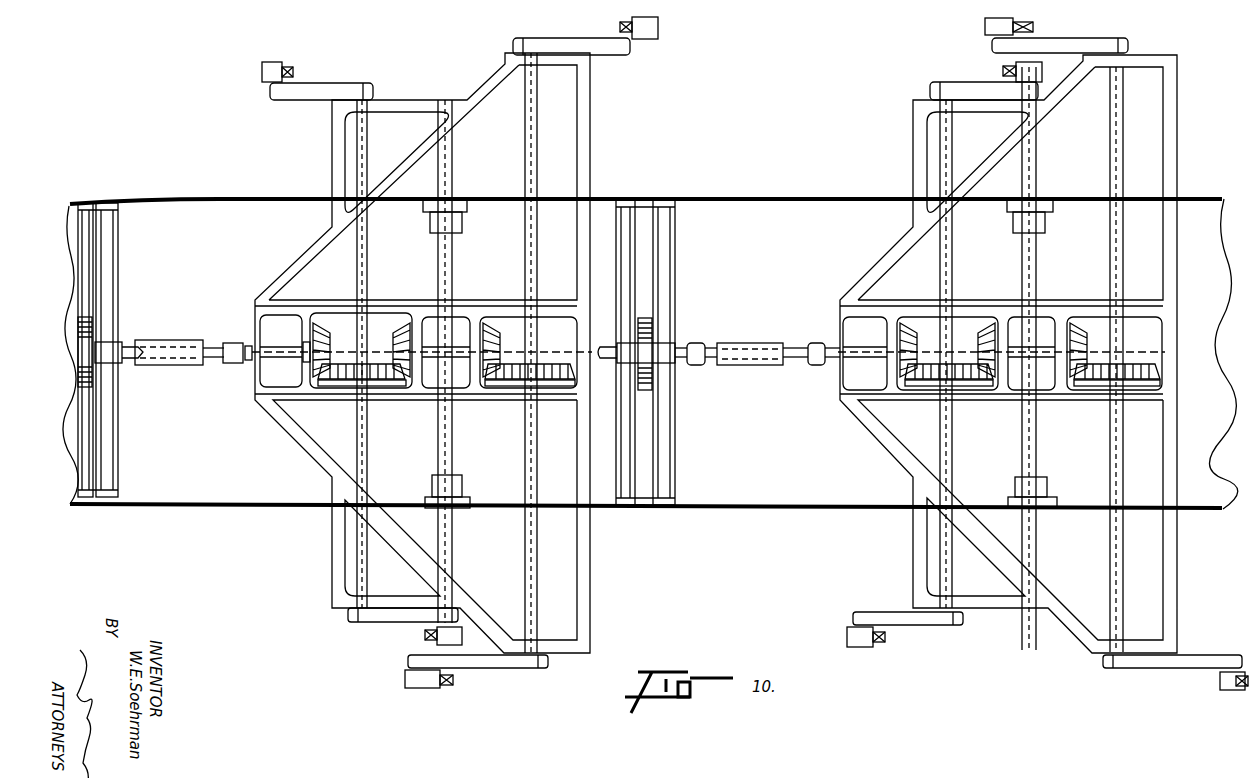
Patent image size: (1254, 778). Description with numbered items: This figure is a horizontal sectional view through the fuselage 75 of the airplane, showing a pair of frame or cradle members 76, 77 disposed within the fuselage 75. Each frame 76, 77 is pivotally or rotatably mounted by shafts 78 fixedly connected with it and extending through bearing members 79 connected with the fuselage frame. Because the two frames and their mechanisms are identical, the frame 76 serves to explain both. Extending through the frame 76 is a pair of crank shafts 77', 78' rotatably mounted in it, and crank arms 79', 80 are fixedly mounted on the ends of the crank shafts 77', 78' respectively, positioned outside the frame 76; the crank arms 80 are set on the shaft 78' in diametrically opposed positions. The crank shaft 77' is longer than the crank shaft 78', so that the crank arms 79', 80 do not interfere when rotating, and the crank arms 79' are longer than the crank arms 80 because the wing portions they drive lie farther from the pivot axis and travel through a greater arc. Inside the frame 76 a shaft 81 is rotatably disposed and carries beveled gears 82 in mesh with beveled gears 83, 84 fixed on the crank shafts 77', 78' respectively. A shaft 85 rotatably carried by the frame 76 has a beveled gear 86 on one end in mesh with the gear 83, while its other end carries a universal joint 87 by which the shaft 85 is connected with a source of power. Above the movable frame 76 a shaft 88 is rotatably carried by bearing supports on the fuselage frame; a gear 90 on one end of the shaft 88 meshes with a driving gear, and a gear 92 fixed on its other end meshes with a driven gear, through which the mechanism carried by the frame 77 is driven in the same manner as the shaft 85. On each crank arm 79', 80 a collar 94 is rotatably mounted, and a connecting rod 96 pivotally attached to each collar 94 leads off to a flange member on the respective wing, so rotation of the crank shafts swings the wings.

The fuselage 75 is at (722, 511).
The frame or cradle member 76 is at (588, 121).
The frame or cradle member 77 is at (1007, 354).
The crank shaft 77' is at (804, 353).
The shaft 78 is at (757, 358).
The crank shaft 78' is at (654, 354).
The bearing member 79 is at (738, 354).
The crank arm 79' is at (825, 389).
The crank arm 80 is at (322, 88).
The shaft 81 is at (440, 362).
The beveled gear 82 is at (400, 330).
The beveled gear 83 is at (338, 388).
The beveled gear 84 is at (565, 392).
The shaft 85 is at (280, 365).
The beveled gear 86 is at (310, 382).
The universal joint 87 is at (224, 362).
The shaft 88 is at (130, 347).
The gear 90 is at (97, 318).
The gear 92 is at (654, 331).
The collar 94 is at (284, 61).
The connecting rod 96 is at (273, 84).